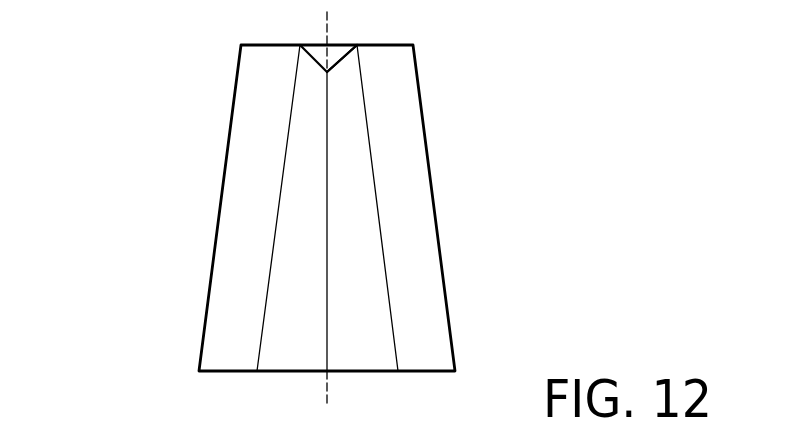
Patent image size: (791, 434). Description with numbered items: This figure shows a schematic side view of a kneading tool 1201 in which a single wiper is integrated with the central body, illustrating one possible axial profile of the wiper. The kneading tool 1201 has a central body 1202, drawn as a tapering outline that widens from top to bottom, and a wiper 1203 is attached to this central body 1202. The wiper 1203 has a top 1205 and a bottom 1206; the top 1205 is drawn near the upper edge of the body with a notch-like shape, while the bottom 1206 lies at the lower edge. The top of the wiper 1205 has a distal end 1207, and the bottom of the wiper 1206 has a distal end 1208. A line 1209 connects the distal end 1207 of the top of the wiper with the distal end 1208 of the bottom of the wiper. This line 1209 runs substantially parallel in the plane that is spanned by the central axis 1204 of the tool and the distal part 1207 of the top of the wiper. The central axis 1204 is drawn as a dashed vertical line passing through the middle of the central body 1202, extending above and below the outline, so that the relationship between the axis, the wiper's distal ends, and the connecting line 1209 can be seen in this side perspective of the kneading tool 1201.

The kneading tool 1201 is at (142, 228).
The central body 1202 is at (254, 96).
The wiper 1203 is at (300, 193).
The central axis 1204 is at (328, 17).
The top of the wiper 1205 is at (335, 53).
The bottom of the wiper 1206 is at (367, 372).
The distal end of the top of the wiper 1207 is at (338, 74).
The distal end of the bottom of the wiper 1208 is at (326, 372).
The line connecting the distal ends 1209 is at (327, 219).